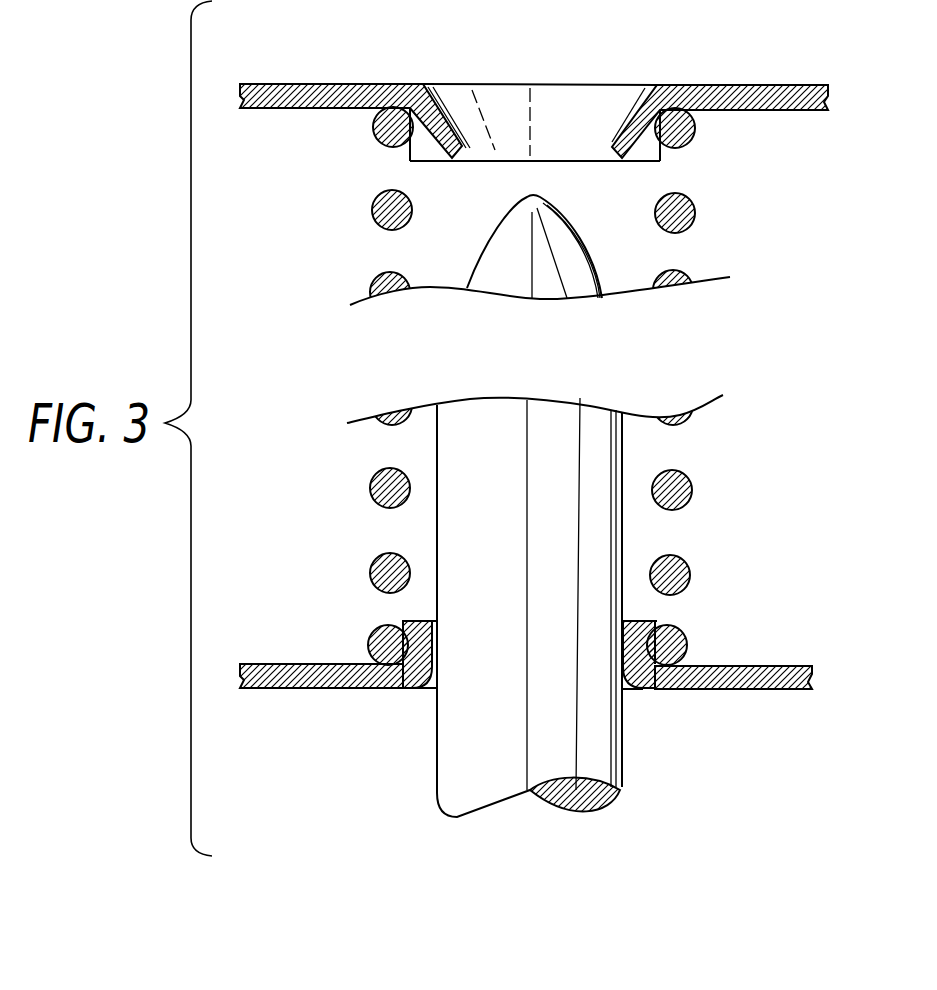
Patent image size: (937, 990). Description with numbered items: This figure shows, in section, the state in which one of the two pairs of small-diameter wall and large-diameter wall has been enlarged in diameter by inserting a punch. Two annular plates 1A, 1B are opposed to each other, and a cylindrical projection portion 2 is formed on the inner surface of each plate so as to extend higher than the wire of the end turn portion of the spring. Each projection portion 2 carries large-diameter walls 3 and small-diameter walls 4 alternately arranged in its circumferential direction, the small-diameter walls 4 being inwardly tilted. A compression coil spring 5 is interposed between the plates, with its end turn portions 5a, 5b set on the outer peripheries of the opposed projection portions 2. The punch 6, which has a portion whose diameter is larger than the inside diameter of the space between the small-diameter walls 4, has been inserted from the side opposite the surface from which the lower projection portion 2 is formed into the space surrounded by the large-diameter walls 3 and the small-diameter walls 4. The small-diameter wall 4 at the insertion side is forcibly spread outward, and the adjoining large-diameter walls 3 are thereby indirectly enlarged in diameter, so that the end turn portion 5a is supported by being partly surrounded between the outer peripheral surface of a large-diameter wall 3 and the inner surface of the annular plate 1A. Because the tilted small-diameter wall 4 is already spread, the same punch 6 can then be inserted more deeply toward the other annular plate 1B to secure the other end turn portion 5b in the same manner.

The annular plate 1A is at (763, 678).
The annular plate 1B is at (777, 98).
The projection portion 2 is at (560, 108).
The large-diameter wall 3 is at (410, 150).
The small-diameter wall 4 is at (445, 152).
The compression coil spring 5 is at (690, 485).
The end turn portion 5a is at (682, 638).
The end turn portion 5b is at (693, 142).
The punch 6 is at (463, 750).